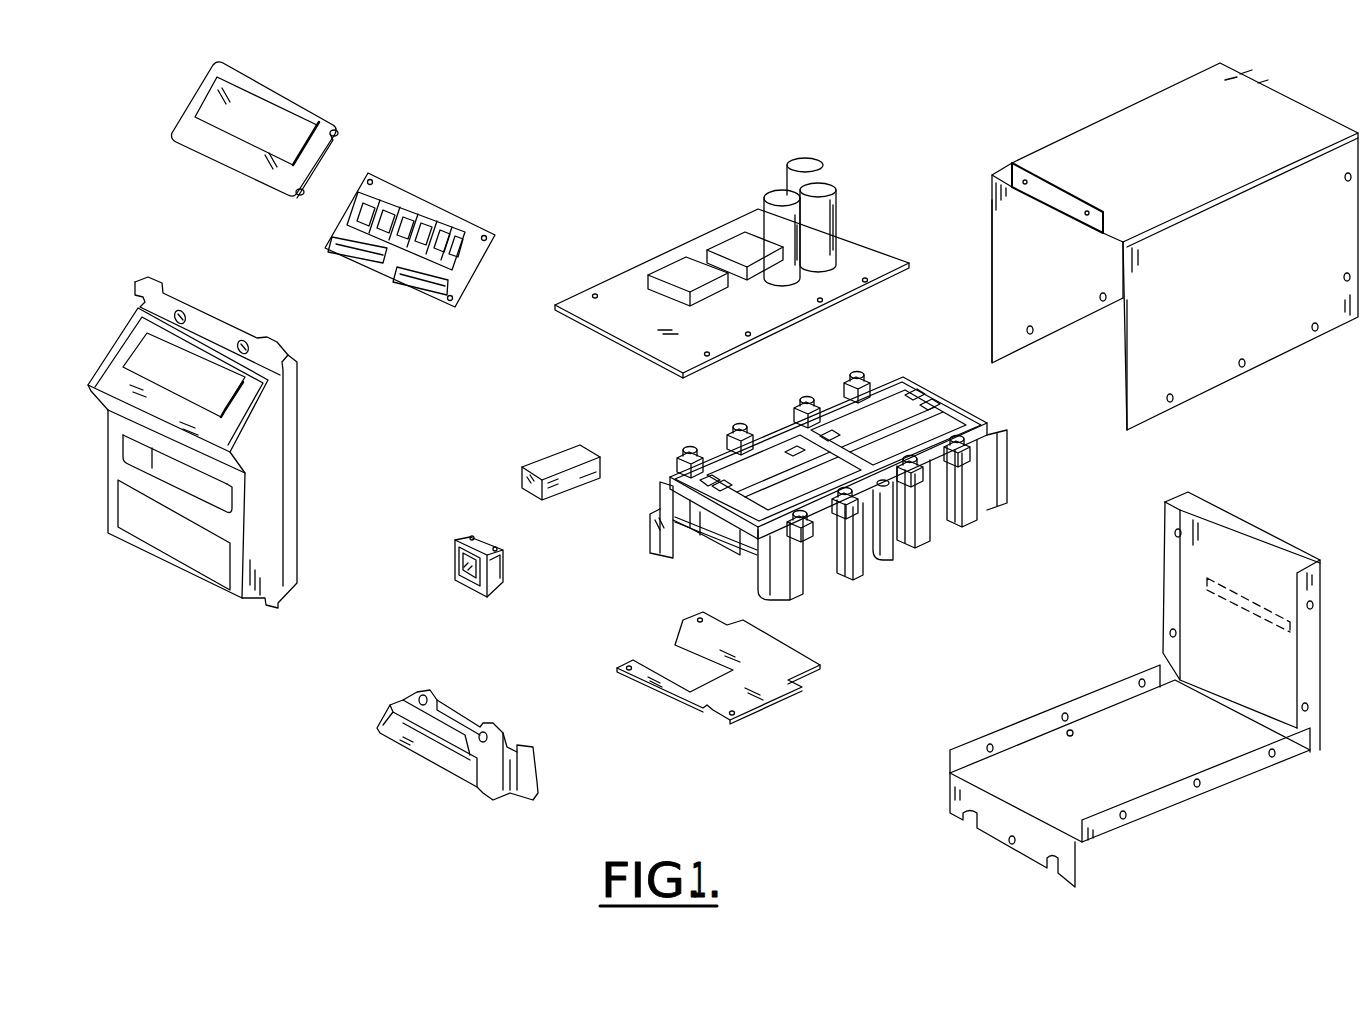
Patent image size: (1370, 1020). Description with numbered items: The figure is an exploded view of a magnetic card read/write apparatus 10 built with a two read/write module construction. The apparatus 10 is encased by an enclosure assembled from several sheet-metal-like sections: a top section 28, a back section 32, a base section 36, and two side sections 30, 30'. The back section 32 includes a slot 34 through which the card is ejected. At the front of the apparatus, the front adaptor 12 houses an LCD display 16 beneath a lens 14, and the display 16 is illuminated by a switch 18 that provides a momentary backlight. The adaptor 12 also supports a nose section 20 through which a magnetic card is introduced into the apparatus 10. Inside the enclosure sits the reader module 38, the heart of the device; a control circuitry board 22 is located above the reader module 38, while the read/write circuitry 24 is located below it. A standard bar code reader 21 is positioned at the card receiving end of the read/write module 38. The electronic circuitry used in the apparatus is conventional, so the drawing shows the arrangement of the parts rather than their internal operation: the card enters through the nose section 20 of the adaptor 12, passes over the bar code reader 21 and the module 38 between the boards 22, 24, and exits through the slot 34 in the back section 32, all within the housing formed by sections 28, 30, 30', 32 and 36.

The magnetic card read/write apparatus 10 is at (1260, 453).
The front adaptor 12 is at (123, 308).
The lens 14 is at (276, 121).
The LCD display 16 is at (447, 197).
The switch 18 is at (464, 530).
The nose section 20 is at (490, 692).
The bar code reader 21 is at (552, 463).
The control circuitry board 22 is at (714, 216).
The read/write circuitry 24 is at (702, 717).
The top section 28 is at (1137, 127).
The side section 30 is at (961, 281).
The side section 30' is at (1192, 375).
The back section 32 is at (1218, 555).
The slot 34 is at (1240, 604).
The base section 36 is at (1135, 720).
The reader module 38 is at (1012, 527).